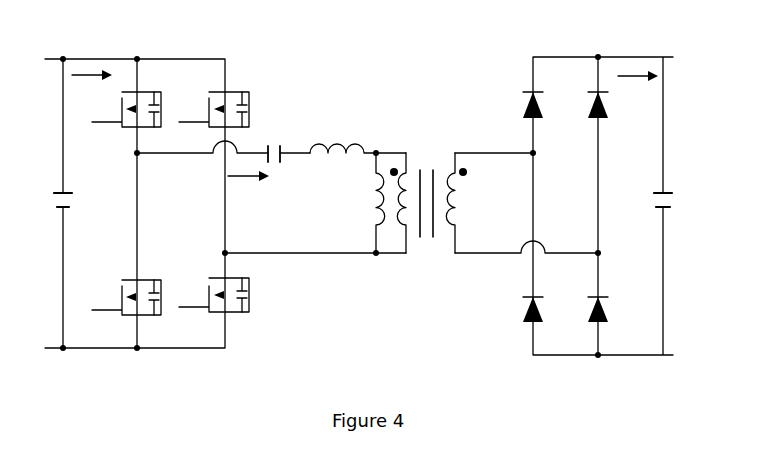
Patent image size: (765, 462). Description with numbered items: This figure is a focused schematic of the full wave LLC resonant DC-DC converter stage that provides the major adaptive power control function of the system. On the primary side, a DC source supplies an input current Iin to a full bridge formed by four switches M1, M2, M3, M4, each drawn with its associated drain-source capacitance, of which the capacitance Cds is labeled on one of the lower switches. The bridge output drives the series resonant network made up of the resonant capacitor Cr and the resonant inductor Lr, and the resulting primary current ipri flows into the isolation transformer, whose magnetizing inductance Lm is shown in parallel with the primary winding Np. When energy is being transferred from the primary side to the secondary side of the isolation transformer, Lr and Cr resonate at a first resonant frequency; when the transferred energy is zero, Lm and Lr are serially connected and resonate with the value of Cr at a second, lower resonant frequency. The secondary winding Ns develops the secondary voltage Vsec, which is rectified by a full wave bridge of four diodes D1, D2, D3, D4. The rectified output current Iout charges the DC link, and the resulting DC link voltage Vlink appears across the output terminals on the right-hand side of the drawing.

The switch M1 is at (115, 109).
The second primary-side switch (MOSFET) M2 is at (207, 109).
The third primary-side switch (MOSFET) M3 is at (221, 302).
The fourth primary-side switch (MOSFET) M4 is at (115, 297).
The drain-source capacitance of switch Cds is at (256, 302).
The resonant capacitor Cr is at (274, 143).
The resonant inductor Lr is at (343, 138).
The magnetizing inductance Lm is at (364, 203).
The transformer primary winding Np is at (395, 188).
The transformer secondary winding Ns is at (458, 188).
The secondary winding voltage Vsec is at (481, 201).
The first rectifier diode D1 is at (548, 118).
The second rectifier diode D2 is at (612, 118).
The third rectifier diode D3 is at (613, 323).
The fourth rectifier diode D4 is at (548, 323).
The input current Iin is at (92, 56).
The primary current ipri is at (248, 188).
The output current Iout is at (638, 56).
The DC link voltage Vlink is at (628, 216).